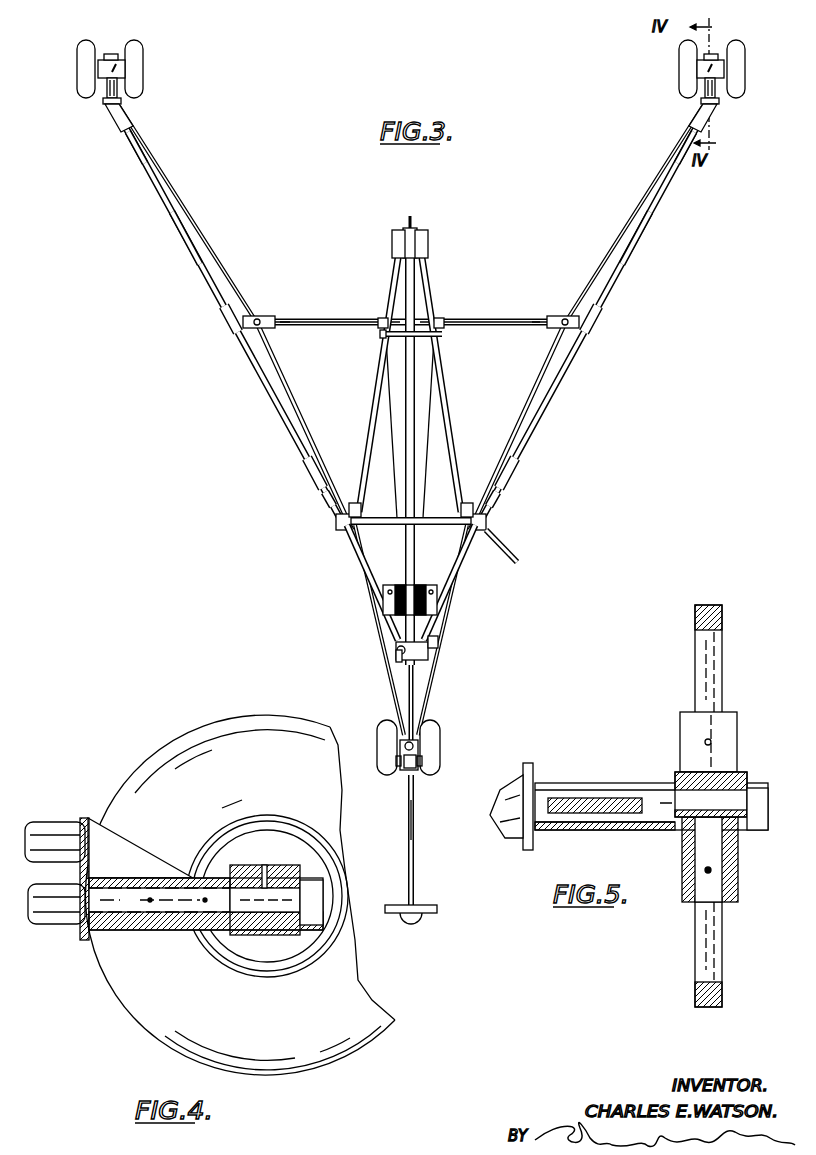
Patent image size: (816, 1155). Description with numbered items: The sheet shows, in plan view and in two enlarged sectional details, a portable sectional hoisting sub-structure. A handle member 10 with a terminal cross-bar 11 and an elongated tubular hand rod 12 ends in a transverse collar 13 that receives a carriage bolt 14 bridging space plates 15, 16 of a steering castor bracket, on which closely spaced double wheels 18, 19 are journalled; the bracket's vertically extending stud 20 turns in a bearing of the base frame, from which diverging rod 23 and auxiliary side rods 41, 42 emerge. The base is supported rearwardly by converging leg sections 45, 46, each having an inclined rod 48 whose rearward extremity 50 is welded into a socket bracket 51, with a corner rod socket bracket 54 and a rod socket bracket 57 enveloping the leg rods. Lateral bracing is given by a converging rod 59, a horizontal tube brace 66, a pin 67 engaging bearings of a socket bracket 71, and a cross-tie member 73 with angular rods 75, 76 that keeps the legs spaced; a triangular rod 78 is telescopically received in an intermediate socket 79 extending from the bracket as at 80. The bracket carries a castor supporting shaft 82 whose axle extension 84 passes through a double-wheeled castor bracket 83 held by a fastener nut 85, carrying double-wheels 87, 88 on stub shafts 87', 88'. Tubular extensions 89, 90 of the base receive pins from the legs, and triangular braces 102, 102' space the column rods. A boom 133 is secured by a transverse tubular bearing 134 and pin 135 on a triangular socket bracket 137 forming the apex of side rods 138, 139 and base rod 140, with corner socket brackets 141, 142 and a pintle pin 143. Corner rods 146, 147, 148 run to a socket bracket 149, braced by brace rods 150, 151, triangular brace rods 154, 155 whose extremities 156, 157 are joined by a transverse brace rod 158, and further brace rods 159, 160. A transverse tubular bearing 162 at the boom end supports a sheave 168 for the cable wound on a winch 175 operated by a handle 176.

In FIG. 3, the handle member 10 is at (414, 853).
In FIG. 3, the terminal cross-bar 11 is at (428, 906).
In FIG. 3, the elongated tubular hand rod 12 is at (414, 824).
In FIG. 3, the transverse collar 13 is at (400, 770).
In FIG. 3, the carriage bolt 14 is at (420, 770).
In FIG. 3, the space plate 15 is at (420, 766).
In FIG. 3, the space plate 16 is at (402, 770).
In FIG. 3, the double wheel 18 is at (436, 760).
In FIG. 3, the double wheel 19 is at (386, 768).
In FIG. 3, the vertically extending stud 20 is at (400, 746).
In FIG. 3, the diverging rod 23 is at (416, 692).
In FIG. 3, the auxiliary side rod 41 is at (398, 696).
In FIG. 3, the auxiliary side rod 42 is at (430, 668).
In FIG. 3, the leg section 45 is at (644, 252).
In FIG. 3, the leg section 46 is at (180, 257).
In FIG. 3, the inclined rod 48 is at (198, 270).
In FIG. 3, the rearward extremity 50 is at (128, 140).
In FIG. 3, the socket bracket 51 is at (124, 112).
In FIG. 4, the socket bracket 51 is at (80, 818).
In FIG. 5, the socket bracket 51 is at (530, 760).
In FIG. 3, the corner rod socket bracket 54 is at (310, 482).
In FIG. 3, the rod socket bracket 57 is at (224, 322).
In FIG. 3, the converging rod 59 is at (293, 398).
In FIG. 3, the horizontal tube brace 66 is at (259, 316).
In FIG. 3, the pin 67 is at (262, 320).
In FIG. 3, the socket bracket 71 is at (272, 320).
In FIG. 3, the cross-tie member 73 is at (470, 318).
In FIG. 3, the angular rod 75 is at (494, 318).
In FIG. 3, the angular rod 76 is at (316, 319).
In FIG. 3, the triangular rod 78 is at (210, 244).
In FIG. 3, the intermediate socket 79 is at (112, 114).
In FIG. 4, the intermediate socket 79 is at (55, 830).
In FIG. 5, the intermediate socket 79 is at (497, 826).
In FIG. 4, the socket extension 80 is at (60, 926).
In FIG. 4, the castor supporting shaft 82 is at (122, 930).
In FIG. 5, the castor supporting shaft 82 is at (598, 783).
In FIG. 3, the double-wheeled castor bracket 83 is at (116, 62).
In FIG. 4, the double-wheeled castor bracket 83 is at (282, 865).
In FIG. 5, the double-wheeled castor bracket 83 is at (742, 774).
In FIG. 4, the axle extension 84 is at (274, 905).
In FIG. 5, the axle extension 84 is at (683, 800).
In FIG. 3, the fastener nut 85 is at (108, 56).
In FIG. 4, the fastener nut 85 is at (318, 902).
In FIG. 5, the fastener nut 85 is at (762, 790).
In FIG. 3, the double-wheel 87 is at (405, 69).
In FIG. 3, the double-wheel 88 is at (411, 69).
In FIG. 4, the double-wheel 88 is at (240, 888).
In FIG. 5, the stub shaft 87' is at (676, 952).
In FIG. 5, the stub shaft 88' is at (685, 660).
In FIG. 3, the tubular extension 89 is at (328, 504).
In FIG. 3, the tubular extension 90 is at (494, 504).
In FIG. 3, the triangular brace 102 is at (341, 564).
In FIG. 3, the triangular brace 102' is at (486, 577).
In FIG. 3, the boom 133 is at (451, 420).
In FIG. 3, the transverse tubular bearing 134 is at (428, 656).
In FIG. 3, the pin 135 is at (438, 642).
In FIG. 3, the triangular socket bracket 137 is at (396, 650).
In FIG. 3, the side rod 138 is at (376, 582).
In FIG. 3, the side rod 139 is at (460, 566).
In FIG. 3, the base rod 140 is at (430, 518).
In FIG. 3, the corner socket bracket 141 is at (356, 542).
In FIG. 3, the corner socket bracket 142 is at (488, 524).
In FIG. 3, the pintle pin 143 is at (338, 524).
In FIG. 3, the corner rod 146 is at (413, 284).
In FIG. 3, the corner rod 147 is at (372, 416).
In FIG. 3, the corner rod 148 is at (446, 386).
In FIG. 3, the socket bracket 149 is at (428, 246).
In FIG. 3, the brace rod 150 is at (388, 517).
In FIG. 3, the brace rod 151 is at (468, 498).
In FIG. 3, the triangular brace rod 154 is at (390, 388).
In FIG. 3, the triangular brace rod 155 is at (430, 374).
In FIG. 3, the brace rod extremity 156 is at (382, 336).
In FIG. 3, the brace rod extremity 157 is at (444, 335).
In FIG. 3, the transverse brace rod 158 is at (386, 340).
In FIG. 3, the triangular brace rod 159 is at (383, 320).
In FIG. 3, the triangular brace rod 160 is at (436, 326).
In FIG. 3, the transverse tubular bearing 162 is at (418, 236).
In FIG. 3, the sheave 168 is at (414, 222).
In FIG. 3, the winch 175 is at (386, 586).
In FIG. 3, the handle 176 is at (520, 562).